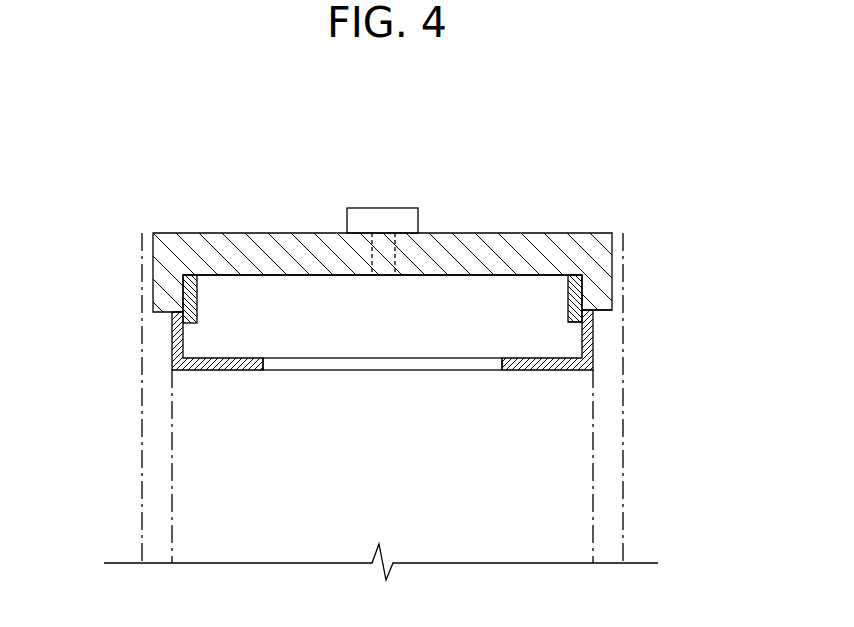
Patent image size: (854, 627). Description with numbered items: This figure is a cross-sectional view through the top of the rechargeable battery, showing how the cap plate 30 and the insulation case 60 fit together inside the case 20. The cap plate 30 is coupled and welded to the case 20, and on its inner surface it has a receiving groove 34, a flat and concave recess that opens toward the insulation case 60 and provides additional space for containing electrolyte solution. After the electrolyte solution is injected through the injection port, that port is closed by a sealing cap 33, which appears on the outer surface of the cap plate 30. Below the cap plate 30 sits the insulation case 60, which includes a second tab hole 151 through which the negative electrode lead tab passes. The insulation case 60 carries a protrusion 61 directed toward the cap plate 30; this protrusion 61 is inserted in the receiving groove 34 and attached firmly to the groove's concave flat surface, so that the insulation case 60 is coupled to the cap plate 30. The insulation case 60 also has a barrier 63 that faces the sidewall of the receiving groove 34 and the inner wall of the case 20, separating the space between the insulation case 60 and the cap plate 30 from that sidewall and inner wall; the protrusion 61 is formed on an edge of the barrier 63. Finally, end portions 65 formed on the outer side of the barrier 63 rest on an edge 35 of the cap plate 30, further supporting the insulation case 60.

The case 20 is at (142, 432).
The cap plate 30 is at (305, 232).
The sealing cap 33 is at (387, 215).
The receiving groove 34 is at (273, 289).
The edge of the cap plate 35 is at (598, 311).
The insulation case 60 is at (393, 288).
The protrusion 61 is at (573, 276).
The barrier 63 is at (593, 348).
The end portions 65 is at (583, 314).
The second tab hole 151 is at (345, 363).